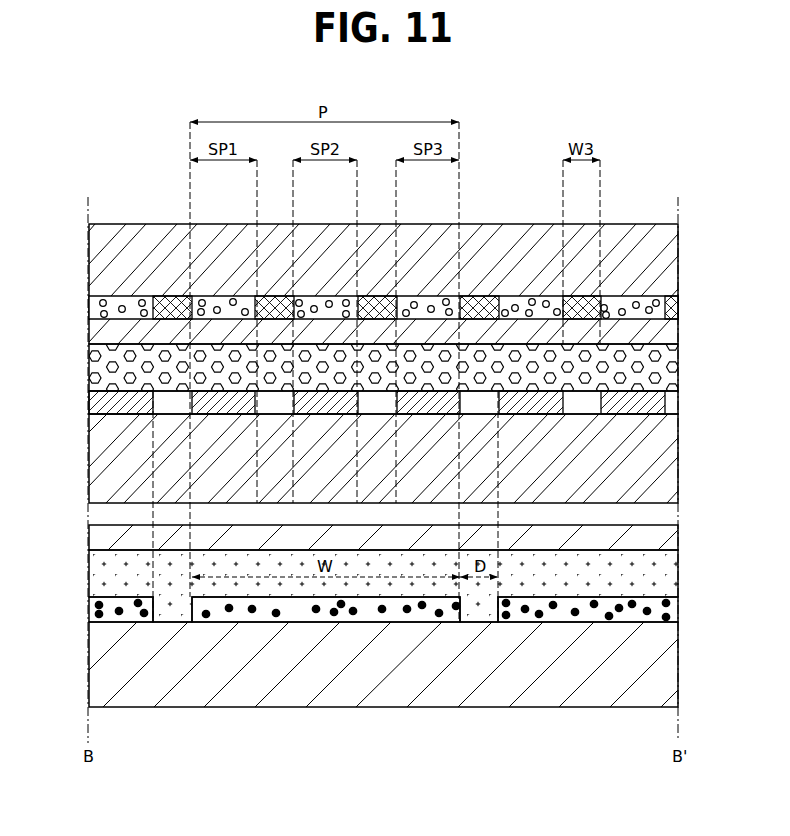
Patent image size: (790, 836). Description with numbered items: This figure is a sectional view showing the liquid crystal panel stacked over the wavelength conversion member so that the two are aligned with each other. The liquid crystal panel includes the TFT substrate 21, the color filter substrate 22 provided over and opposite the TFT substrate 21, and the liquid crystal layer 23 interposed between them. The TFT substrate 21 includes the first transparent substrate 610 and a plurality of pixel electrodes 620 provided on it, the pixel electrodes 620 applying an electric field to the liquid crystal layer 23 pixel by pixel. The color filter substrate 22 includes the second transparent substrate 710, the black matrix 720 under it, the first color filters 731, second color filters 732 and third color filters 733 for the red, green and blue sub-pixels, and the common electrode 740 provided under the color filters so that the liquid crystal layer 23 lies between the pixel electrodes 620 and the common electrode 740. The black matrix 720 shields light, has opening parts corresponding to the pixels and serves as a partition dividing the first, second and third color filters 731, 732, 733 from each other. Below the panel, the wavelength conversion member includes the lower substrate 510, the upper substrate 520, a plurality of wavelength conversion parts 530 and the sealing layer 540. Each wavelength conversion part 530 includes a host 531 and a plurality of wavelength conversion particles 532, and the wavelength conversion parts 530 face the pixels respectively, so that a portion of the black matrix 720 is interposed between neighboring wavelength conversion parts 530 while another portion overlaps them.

The second transparent substrate 710 is at (676, 264).
The common electrode 740 is at (414, 262).
The first color filter 731 is at (218, 300).
The second color filter 732 is at (319, 300).
The third color filter 733 is at (420, 300).
The black matrix 720 is at (376, 300).
The color filter substrate 22 is at (87, 225).
The liquid crystal layer 23 is at (88, 372).
The pixel electrode 620 is at (667, 402).
The first transparent substrate 610 is at (668, 456).
The TFT substrate 21 is at (87, 392).
The upper substrate 520 is at (95, 537).
The sealing layer 540 is at (670, 577).
The wavelength conversion part 530 is at (383, 687).
The host 531 is at (312, 617).
The wavelength conversion particle 532 is at (389, 617).
The lower substrate 510 is at (95, 660).